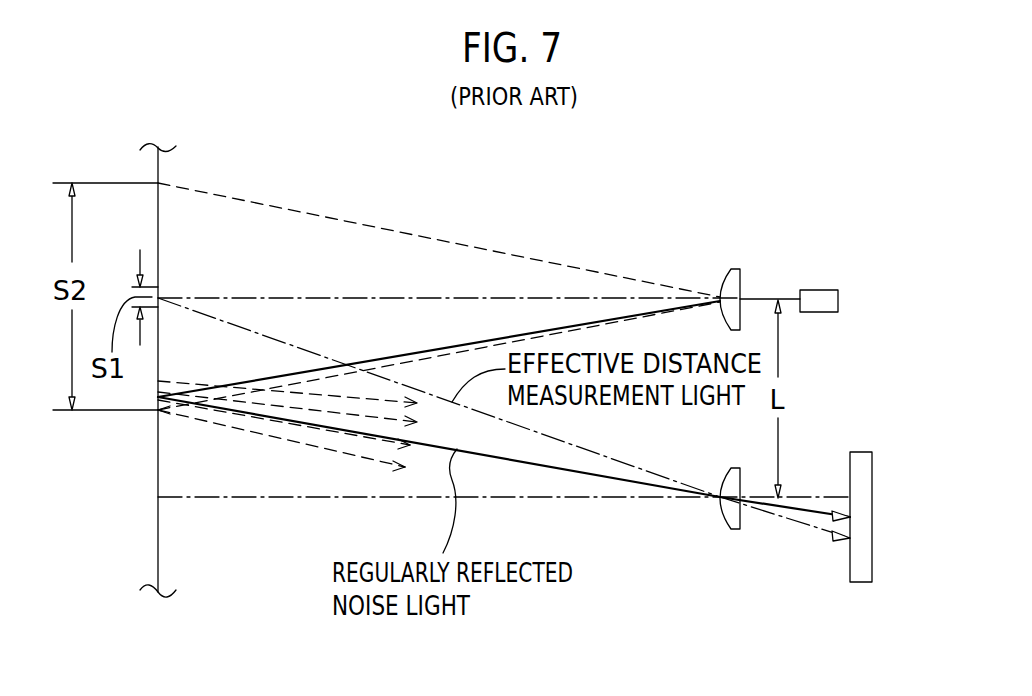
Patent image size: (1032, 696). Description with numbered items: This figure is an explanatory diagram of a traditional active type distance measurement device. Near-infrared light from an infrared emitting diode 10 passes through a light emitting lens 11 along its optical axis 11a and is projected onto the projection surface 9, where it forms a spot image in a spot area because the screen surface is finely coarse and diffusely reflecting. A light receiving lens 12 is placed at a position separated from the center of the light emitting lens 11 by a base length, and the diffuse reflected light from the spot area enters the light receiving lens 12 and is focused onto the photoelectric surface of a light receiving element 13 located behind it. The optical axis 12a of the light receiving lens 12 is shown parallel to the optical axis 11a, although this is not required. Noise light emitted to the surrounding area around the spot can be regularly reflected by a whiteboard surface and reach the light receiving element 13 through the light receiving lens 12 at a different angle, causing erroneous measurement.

The projection surface 9 is at (158, 233).
The infrared emitting diode 10 is at (816, 290).
The light emitting lens 11 is at (726, 282).
The optical axis of the light emitting lens 11a is at (258, 297).
The light receiving lens 12 is at (722, 520).
The optical axis of the light receiving lens 12a is at (565, 498).
The light receiving element 13 is at (861, 582).